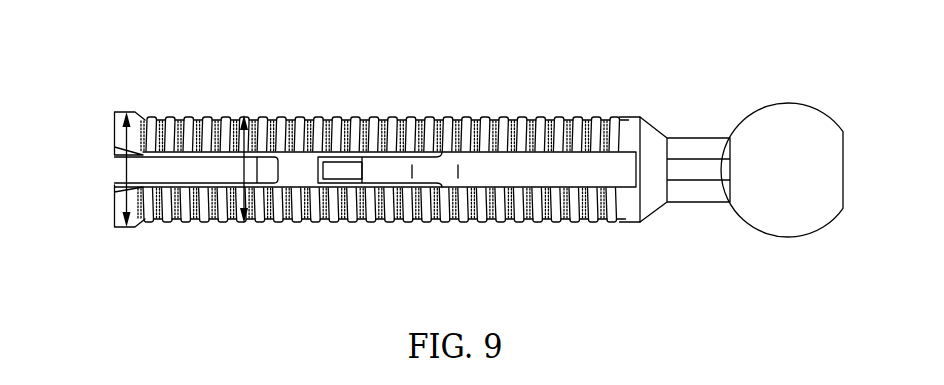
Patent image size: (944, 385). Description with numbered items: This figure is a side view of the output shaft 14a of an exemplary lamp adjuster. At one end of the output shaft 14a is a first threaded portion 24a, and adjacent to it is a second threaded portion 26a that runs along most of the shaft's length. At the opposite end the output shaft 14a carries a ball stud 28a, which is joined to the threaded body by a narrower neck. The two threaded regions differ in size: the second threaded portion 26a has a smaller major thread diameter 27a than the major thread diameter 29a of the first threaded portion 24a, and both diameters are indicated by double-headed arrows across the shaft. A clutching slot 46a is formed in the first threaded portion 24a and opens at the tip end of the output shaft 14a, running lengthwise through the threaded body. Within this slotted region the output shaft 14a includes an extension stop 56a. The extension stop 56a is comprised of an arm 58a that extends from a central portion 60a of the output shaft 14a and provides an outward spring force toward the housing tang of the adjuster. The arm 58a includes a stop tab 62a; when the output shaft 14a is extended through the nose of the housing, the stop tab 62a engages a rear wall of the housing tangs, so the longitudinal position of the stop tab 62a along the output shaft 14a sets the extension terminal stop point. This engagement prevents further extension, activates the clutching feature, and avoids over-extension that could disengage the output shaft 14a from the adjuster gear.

The output shaft 14a is at (476, 52).
The first threaded portion 24a is at (113, 107).
The second threaded portion 26a is at (155, 101).
The major thread diameter 27a is at (244, 173).
The ball stud 28a is at (789, 136).
The major thread diameter 29a is at (126, 164).
The clutching slot 46a is at (108, 171).
The extension stop 56a is at (381, 175).
The arm 58a is at (418, 169).
The central portion 60a is at (465, 169).
The stop tab 62a is at (358, 161).